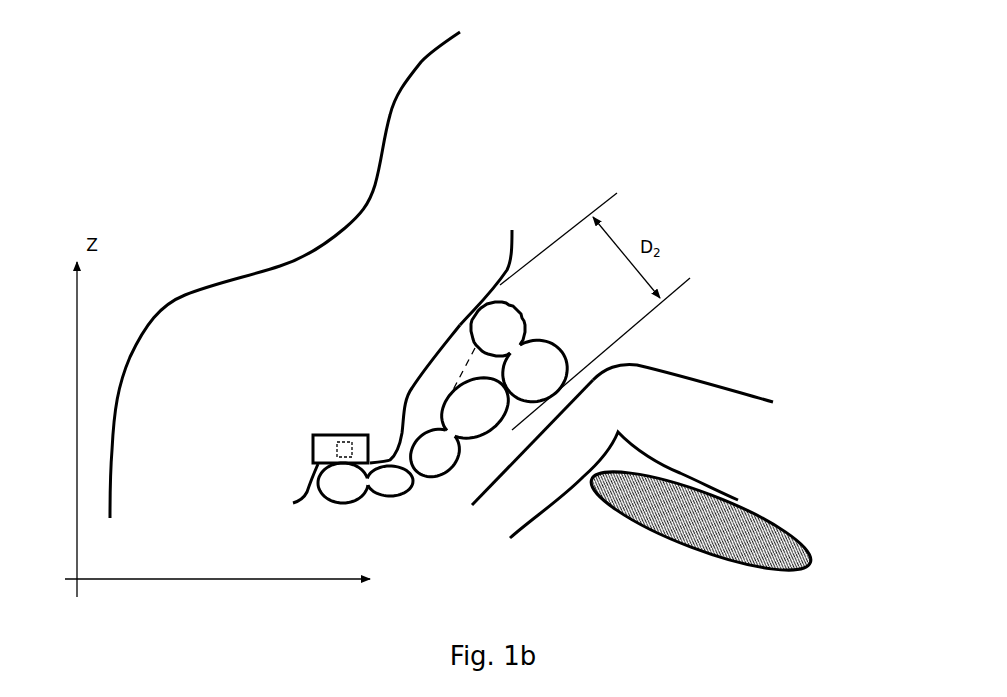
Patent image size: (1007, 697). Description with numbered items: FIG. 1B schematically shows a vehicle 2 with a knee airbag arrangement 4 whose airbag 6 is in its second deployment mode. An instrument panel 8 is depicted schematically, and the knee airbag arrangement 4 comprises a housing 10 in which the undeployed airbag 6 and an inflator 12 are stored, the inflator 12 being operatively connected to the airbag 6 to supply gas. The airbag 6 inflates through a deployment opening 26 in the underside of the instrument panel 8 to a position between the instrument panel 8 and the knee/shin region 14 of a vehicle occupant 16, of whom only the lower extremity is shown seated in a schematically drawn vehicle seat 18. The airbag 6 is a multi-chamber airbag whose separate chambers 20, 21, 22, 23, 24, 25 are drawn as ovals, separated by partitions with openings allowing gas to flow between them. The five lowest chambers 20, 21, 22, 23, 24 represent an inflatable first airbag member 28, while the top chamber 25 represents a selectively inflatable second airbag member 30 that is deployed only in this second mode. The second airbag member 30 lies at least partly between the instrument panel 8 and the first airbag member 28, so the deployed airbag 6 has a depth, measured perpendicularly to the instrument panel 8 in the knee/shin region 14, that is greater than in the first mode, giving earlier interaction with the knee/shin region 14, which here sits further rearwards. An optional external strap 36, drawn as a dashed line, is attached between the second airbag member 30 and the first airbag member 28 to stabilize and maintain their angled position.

The vehicle 2 is at (420, 62).
The knee airbag arrangement 4 is at (442, 430).
The airbag 6 is at (408, 498).
The instrument panel 8 is at (508, 275).
The housing 10 is at (313, 445).
The inflator 12 is at (338, 440).
The knee/shin region 14 is at (552, 430).
The vehicle occupant 16 is at (755, 428).
The vehicle seat 18 is at (701, 520).
The chamber 20 is at (343, 483).
The chamber 21 is at (390, 481).
The chamber 22 is at (435, 452).
The chamber 23 is at (475, 408).
The chamber 24 is at (535, 371).
The chamber 25 is at (498, 329).
The deployment opening 26 is at (316, 470).
The first airbag member 28 is at (457, 468).
The second airbag member 30 is at (516, 317).
The external strap 36 is at (458, 368).